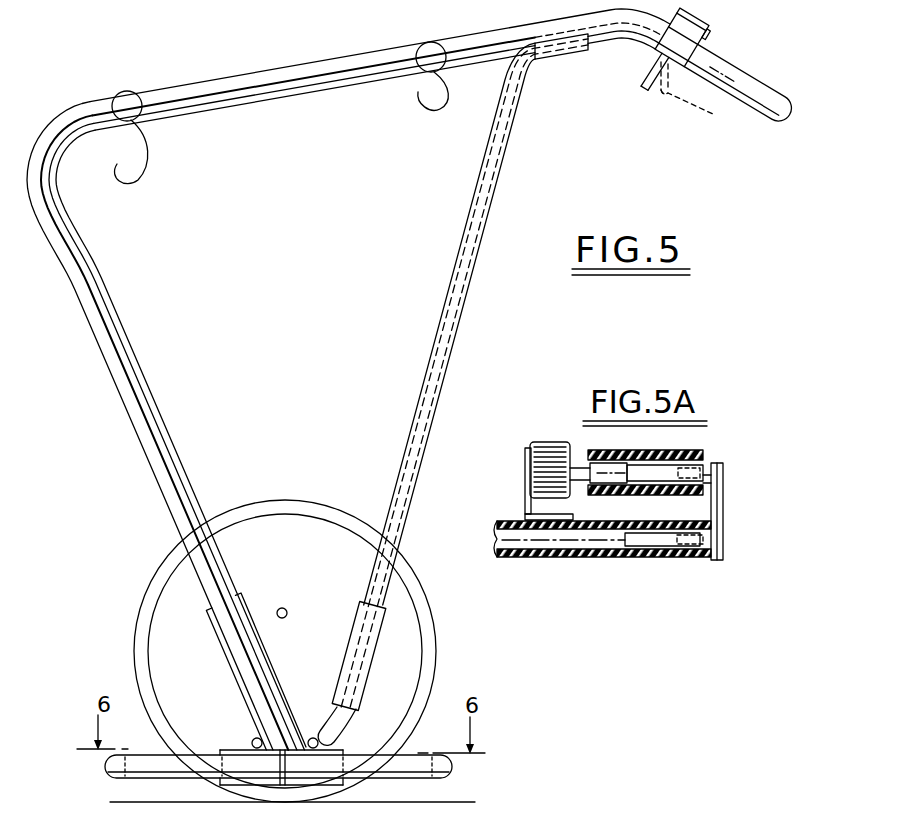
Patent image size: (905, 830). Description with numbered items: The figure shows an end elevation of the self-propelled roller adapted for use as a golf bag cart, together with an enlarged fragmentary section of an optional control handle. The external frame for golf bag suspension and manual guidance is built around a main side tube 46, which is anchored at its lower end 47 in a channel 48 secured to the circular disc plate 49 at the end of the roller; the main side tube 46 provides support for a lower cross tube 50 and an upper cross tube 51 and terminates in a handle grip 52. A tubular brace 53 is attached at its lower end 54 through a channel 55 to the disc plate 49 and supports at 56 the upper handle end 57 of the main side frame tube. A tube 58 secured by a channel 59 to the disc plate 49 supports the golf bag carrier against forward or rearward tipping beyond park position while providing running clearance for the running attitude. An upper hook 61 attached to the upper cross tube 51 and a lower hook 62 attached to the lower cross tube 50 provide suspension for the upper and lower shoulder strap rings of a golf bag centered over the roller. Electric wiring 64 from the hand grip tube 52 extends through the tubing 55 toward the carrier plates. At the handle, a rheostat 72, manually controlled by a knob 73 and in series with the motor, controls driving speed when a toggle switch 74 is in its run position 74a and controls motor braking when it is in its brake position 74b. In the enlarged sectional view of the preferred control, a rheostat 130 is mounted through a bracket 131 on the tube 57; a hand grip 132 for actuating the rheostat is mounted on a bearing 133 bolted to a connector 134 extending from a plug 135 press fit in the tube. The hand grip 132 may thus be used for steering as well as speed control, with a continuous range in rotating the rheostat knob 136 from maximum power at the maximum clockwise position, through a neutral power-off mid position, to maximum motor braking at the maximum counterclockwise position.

In FIG. 5, the main side tube 46 is at (152, 407).
In FIG. 5, the lower end 47 is at (213, 582).
In FIG. 5, the channel 48 is at (222, 627).
In FIG. 5, the circular disc plate 49 is at (306, 503).
In FIG. 5, the lower cross tube 50 is at (132, 92).
In FIG. 5, the upper cross tube 51 is at (420, 42).
In FIG. 5, the handle grip 52 is at (773, 93).
In FIG. 5, the tubular brace 53 is at (433, 415).
In FIG. 5, the lower end 54 is at (382, 603).
In FIG. 5, the channel 55 is at (372, 666).
In FIG. 5, the support point 56 is at (572, 58).
In FIG. 5, the upper handle end 57 is at (643, 30).
In FIG. 5A, the upper handle end 57 is at (570, 558).
In FIG. 5, the tube 58 is at (125, 771).
In FIG. 5, the channel 59 is at (312, 786).
In FIG. 5, the upper hook 61 is at (437, 109).
In FIG. 5, the lower hook 62 is at (146, 166).
In FIG. 5, the electric wiring 64 is at (453, 335).
In FIG. 5, the rheostat 72 is at (763, 15).
In FIG. 5, the knob 73 is at (705, 33).
In FIG. 5, the toggle switch 74 is at (663, 110).
In FIG. 5, the run position 74a is at (652, 82).
In FIG. 5, the brake position 74b is at (711, 99).
In FIG. 5A, the rheostat 130 is at (544, 463).
In FIG. 5A, the bracket 131 is at (524, 504).
In FIG. 5A, the hand grip 132 is at (688, 495).
In FIG. 5A, the bearing 133 is at (701, 468).
In FIG. 5A, the connector 134 is at (724, 498).
In FIG. 5A, the plug 135 is at (650, 538).
In FIG. 5A, the rheostat knob 136 is at (576, 468).